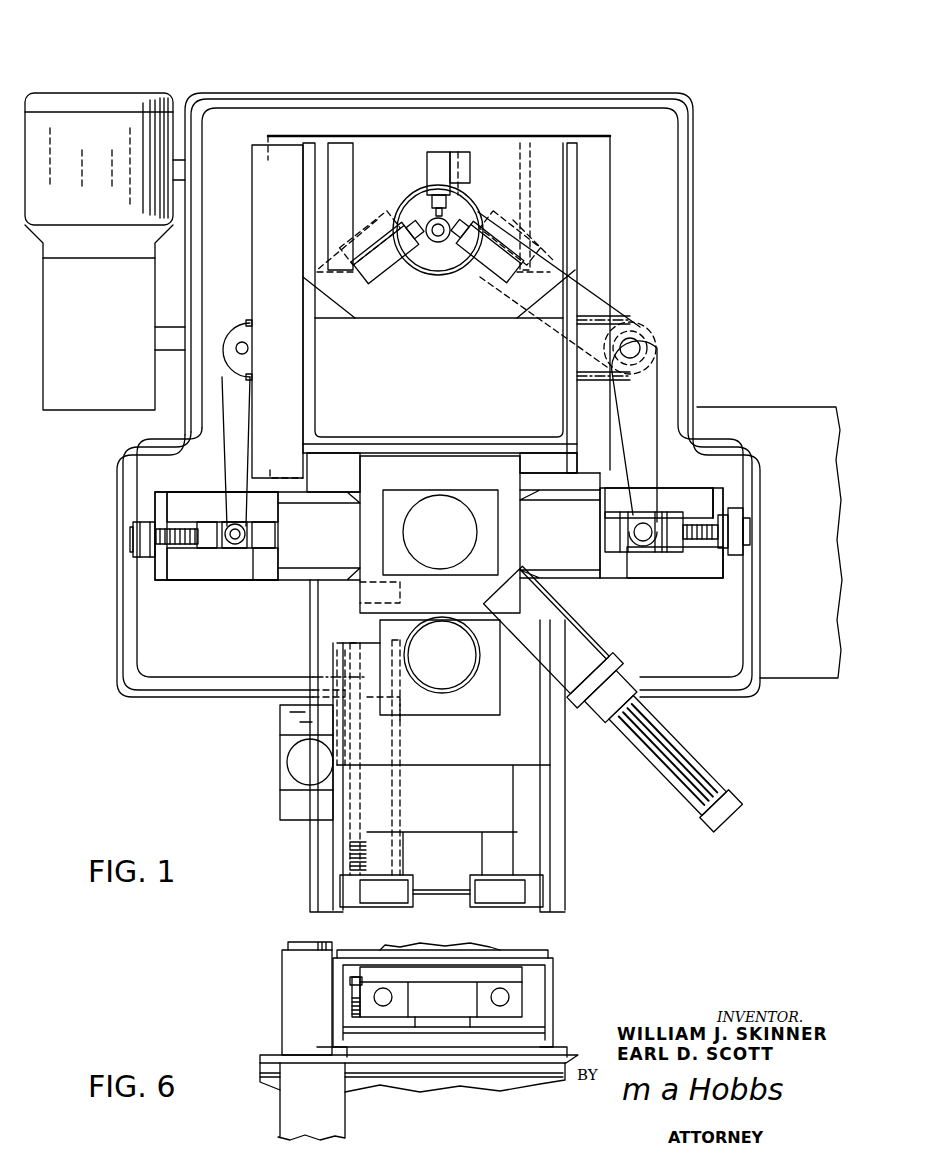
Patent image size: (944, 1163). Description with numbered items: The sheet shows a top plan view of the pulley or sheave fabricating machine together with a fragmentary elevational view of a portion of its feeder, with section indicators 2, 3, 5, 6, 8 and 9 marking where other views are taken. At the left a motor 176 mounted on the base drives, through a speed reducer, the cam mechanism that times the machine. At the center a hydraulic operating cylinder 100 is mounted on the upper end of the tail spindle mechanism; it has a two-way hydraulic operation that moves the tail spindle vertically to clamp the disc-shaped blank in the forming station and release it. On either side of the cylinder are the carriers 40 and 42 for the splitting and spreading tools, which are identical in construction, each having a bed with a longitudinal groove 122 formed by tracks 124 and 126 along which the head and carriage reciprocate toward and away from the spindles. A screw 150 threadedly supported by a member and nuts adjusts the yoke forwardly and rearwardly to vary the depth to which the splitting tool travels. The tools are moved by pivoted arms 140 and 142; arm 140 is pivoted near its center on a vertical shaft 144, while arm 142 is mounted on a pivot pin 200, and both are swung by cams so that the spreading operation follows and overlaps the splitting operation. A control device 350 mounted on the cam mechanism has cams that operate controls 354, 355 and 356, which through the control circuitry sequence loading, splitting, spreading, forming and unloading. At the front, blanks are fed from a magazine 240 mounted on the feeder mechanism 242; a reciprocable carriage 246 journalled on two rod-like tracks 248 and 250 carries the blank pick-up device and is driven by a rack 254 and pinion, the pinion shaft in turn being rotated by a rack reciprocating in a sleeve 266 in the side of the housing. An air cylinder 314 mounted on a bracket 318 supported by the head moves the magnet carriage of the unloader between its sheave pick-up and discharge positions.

In FIG. 1, the motor 176 is at (110, 188).
In FIG. 1, the pivot pin 200 is at (248, 320).
In FIG. 1, the pivoted arm 142 is at (230, 467).
In FIG. 1, the vertical shaft 144 is at (632, 340).
In FIG. 1, the pivoted arm 140 is at (645, 413).
In FIG. 1, the control device 350 is at (452, 218).
In FIG. 1, the control 356 is at (427, 172).
In FIG. 1, the control 354 is at (390, 267).
In FIG. 1, the control 355 is at (490, 267).
In FIG. 1, the hydraulic operating cylinder 100 is at (455, 540).
In FIG. 1, the carrier 42 is at (233, 580).
In FIG. 1, the carrier 40 is at (638, 580).
In FIG. 1, the longitudinal groove 122 is at (172, 523).
In FIG. 1, the track 124 is at (173, 570).
In FIG. 1, the track 126 is at (670, 570).
In FIG. 1, the screw 150 is at (178, 540).
In FIG. 1, the bracket 318 is at (587, 642).
In FIG. 1, the air cylinder 314 is at (684, 795).
In FIG. 1, the magazine 240 is at (423, 687).
In FIG. 1, the feeder mechanism 242 is at (575, 842).
In FIG. 1, the rod-like track 248 is at (383, 818).
In FIG. 6, the rod-like track 248 is at (377, 998).
In FIG. 1, the rack 254 is at (348, 857).
In FIG. 1, the sleeve 266 is at (302, 760).
In FIG. 6, the sleeve 266 is at (307, 948).
In FIG. 6, the reciprocable carriage 246 is at (510, 973).
In FIG. 6, the rod-like track 250 is at (504, 998).
In FIG. 1, the section line 2- 2 is at (147, 33).
In FIG. 1, the section line 3- 3 is at (67, 497).
In FIG. 1, the section line 5- 5 is at (472, 45).
In FIG. 1, the section line 6- 6 is at (265, 900).
In FIG. 1, the section line 8- 8 is at (218, 717).
In FIG. 1, the section line 9- 9 is at (410, 460).